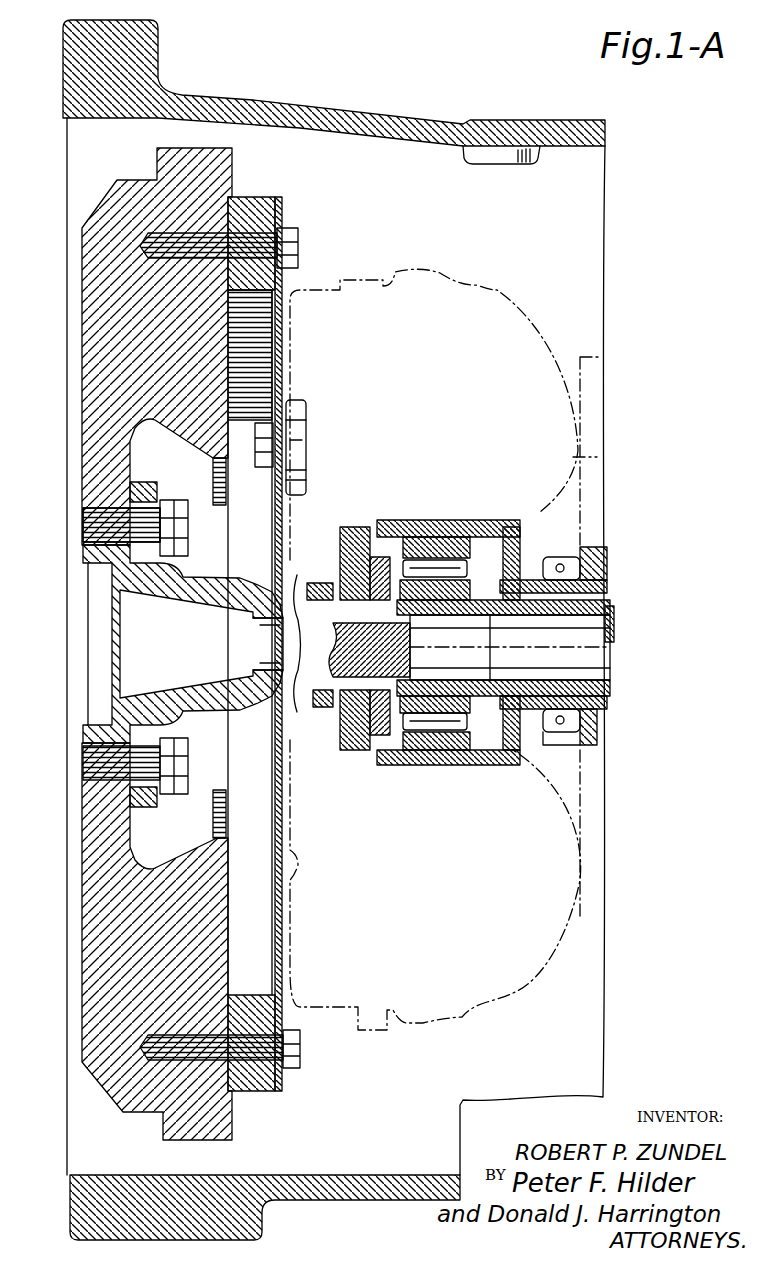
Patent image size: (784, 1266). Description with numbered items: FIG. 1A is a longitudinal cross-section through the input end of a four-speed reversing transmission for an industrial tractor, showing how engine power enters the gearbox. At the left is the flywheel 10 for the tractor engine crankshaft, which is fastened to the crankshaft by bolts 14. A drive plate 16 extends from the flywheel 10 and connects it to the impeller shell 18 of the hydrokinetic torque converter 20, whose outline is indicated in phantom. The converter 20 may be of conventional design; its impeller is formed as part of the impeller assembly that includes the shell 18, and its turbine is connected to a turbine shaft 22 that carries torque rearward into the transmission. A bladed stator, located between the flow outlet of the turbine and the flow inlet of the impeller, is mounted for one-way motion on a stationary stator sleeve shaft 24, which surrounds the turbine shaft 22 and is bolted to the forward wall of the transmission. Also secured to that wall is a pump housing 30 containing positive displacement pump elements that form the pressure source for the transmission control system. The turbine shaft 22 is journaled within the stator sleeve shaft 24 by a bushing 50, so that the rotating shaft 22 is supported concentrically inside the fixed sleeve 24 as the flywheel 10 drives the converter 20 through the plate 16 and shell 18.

The flywheel 10 is at (212, 911).
The bolts 14 is at (192, 531).
The drive plate 16 is at (280, 389).
The impeller shell 18 is at (597, 457).
The hydrokinetic torque converter 20 is at (583, 363).
The turbine shaft 22 is at (577, 627).
The stator sleeve shaft 24 is at (517, 683).
The pump housing 30 is at (597, 727).
The bushing 50 is at (427, 677).